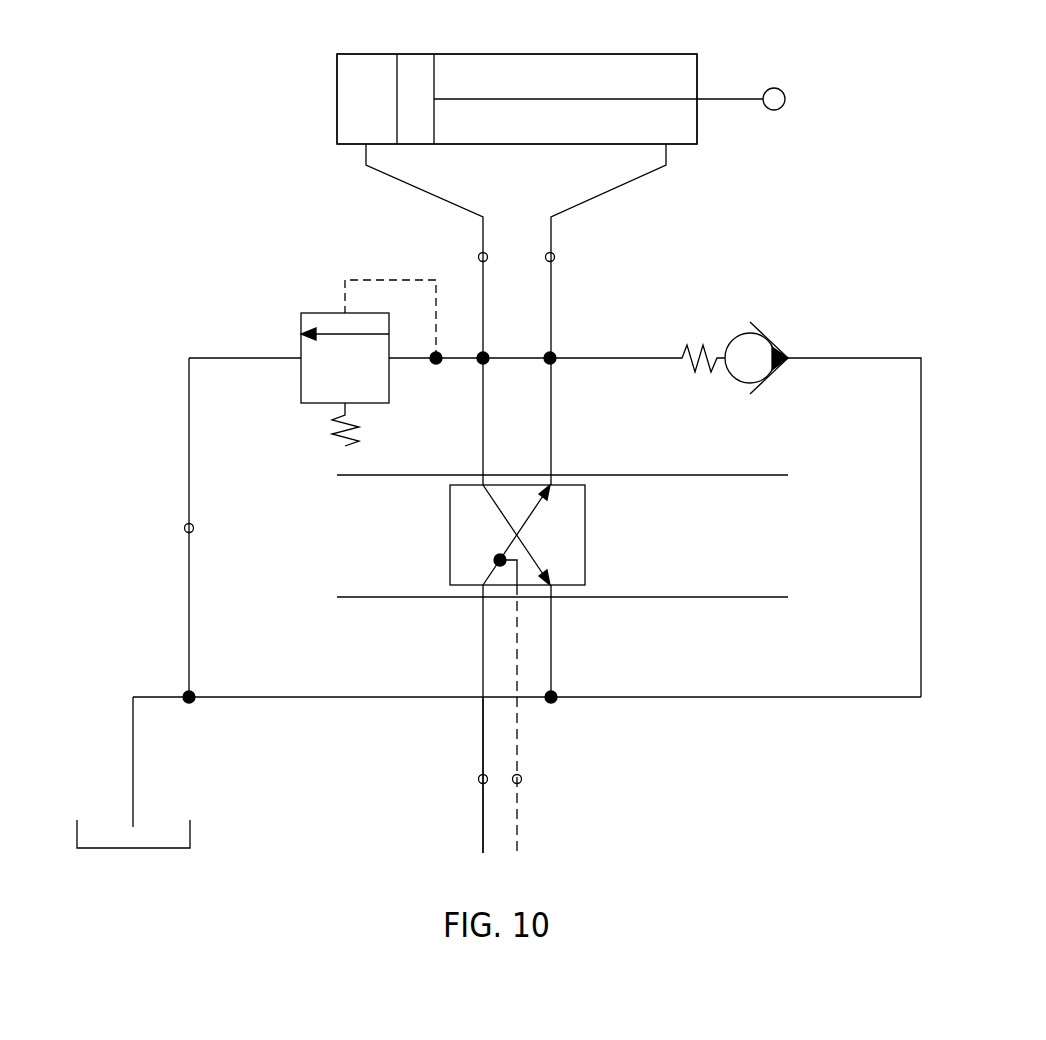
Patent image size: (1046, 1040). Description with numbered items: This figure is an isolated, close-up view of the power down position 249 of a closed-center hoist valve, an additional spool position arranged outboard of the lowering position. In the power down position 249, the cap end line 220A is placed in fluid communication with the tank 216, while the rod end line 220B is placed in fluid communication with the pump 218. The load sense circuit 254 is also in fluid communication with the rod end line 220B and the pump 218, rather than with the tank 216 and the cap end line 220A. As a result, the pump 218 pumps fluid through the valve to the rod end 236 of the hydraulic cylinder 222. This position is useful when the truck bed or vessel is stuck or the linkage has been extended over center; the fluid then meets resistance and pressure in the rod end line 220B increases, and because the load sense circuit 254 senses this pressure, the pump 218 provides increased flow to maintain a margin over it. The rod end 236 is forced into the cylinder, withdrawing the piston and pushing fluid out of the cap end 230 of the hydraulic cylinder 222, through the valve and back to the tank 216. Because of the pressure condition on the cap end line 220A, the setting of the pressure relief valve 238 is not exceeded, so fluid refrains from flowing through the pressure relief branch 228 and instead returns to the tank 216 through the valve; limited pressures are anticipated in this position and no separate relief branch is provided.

The hydraulic cylinder 222 is at (557, 45).
The cap end 230 is at (337, 103).
The rod end 236 is at (776, 110).
The cap end line 220A is at (478, 257).
The rod end line 220B is at (555, 257).
The pressure relief valve 238 is at (323, 313).
The power down position 249 is at (566, 485).
The pressure relief branch 228 is at (184, 528).
The tank 216 is at (192, 833).
The pump 218 is at (478, 779).
The load sense circuit 254 is at (522, 779).